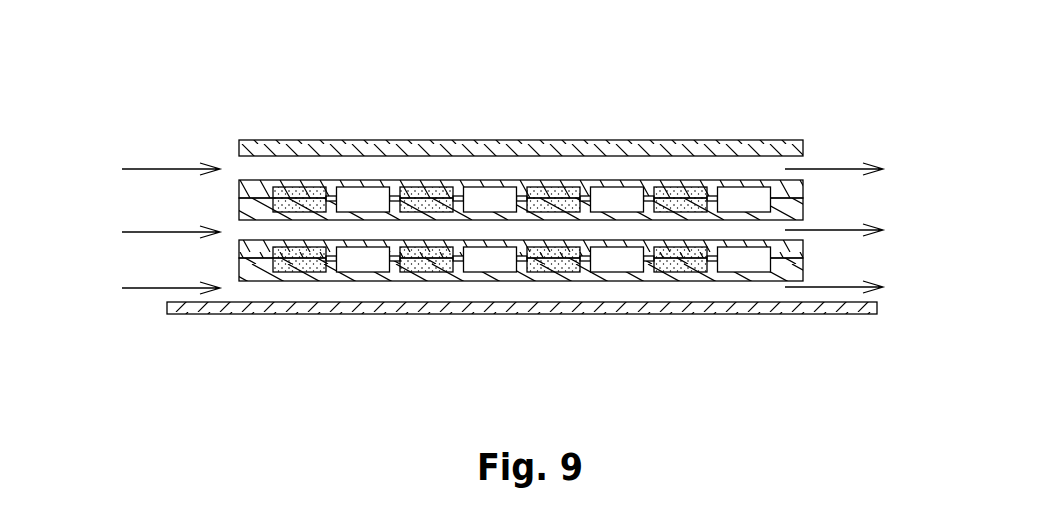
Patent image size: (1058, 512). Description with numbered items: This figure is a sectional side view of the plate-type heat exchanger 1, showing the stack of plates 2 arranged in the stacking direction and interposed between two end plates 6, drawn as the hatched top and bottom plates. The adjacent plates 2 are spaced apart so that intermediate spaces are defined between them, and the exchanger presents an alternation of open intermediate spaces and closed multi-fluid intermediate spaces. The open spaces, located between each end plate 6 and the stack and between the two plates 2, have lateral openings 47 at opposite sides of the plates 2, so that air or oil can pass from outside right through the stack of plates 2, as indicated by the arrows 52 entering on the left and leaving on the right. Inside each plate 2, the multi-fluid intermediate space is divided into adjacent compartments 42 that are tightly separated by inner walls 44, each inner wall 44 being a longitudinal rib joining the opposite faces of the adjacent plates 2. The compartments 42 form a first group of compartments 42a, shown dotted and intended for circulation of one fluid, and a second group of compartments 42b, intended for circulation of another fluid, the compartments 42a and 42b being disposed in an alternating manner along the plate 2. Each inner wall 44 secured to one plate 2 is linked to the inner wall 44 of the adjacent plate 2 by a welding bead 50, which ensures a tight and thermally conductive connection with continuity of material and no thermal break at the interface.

The heat exchanger 1 is at (258, 118).
The plates 2 is at (802, 248).
The end plates 6 is at (522, 145).
The compartments 42 is at (513, 159).
The compartments of the first group 42a is at (300, 187).
The compartments of the second group 42b is at (358, 193).
The inner wall 44 is at (580, 263).
The lateral openings 47 is at (240, 170).
The welding bead 50 is at (460, 197).
The arrow 52 is at (140, 288).